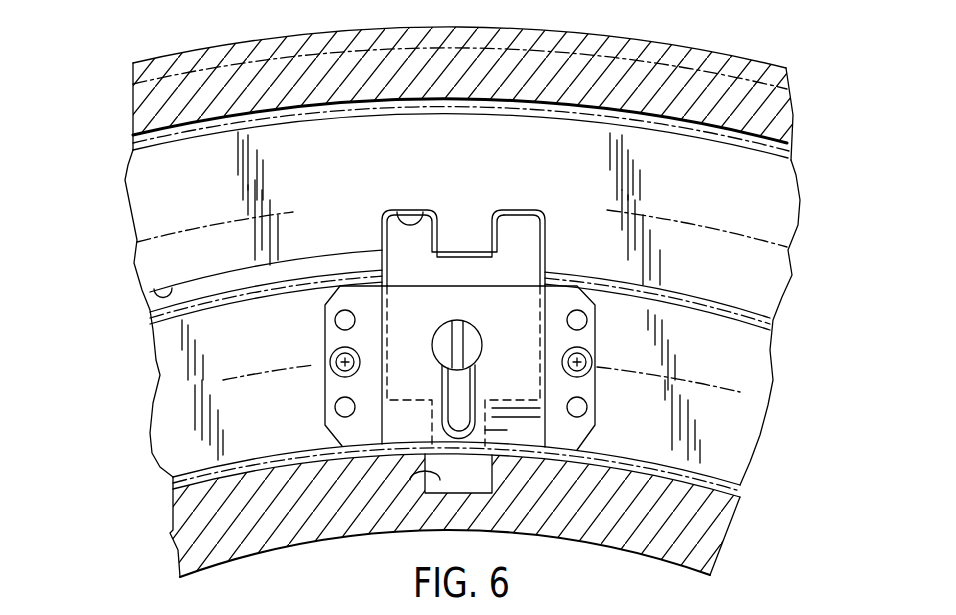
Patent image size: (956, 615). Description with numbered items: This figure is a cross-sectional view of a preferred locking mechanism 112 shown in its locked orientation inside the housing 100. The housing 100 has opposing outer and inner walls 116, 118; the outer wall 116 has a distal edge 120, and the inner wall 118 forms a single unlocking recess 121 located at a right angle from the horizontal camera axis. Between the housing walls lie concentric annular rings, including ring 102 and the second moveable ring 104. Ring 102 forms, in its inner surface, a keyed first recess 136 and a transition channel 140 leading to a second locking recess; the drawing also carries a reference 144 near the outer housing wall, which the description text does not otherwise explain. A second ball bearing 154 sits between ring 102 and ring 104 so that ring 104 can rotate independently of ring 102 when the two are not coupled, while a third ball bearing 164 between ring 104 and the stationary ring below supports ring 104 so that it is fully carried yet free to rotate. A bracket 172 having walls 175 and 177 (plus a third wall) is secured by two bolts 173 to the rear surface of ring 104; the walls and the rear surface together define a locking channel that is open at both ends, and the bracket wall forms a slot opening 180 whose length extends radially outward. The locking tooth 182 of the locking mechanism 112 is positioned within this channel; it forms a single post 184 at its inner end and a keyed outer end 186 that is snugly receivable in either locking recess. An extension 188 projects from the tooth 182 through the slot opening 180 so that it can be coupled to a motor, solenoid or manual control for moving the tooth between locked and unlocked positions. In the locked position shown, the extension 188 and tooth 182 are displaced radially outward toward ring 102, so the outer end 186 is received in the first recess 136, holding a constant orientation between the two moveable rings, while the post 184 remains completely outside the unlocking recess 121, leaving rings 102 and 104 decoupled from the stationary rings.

The housing 100 is at (630, 38).
The ring 102 is at (752, 191).
The second moveable ring 104 is at (749, 459).
The locking mechanism 112 is at (514, 321).
The outer wall 116 is at (300, 77).
The inner wall 118 is at (745, 535).
The distal edge 120 is at (757, 88).
The unlocking recess 121 is at (425, 460).
The first recess 136 is at (396, 220).
The transition channel 140 is at (155, 300).
The outer flange 144 is at (133, 147).
The second ball bearing 154 is at (150, 320).
The third ball bearing 164 is at (173, 481).
The bracket 172 is at (332, 395).
The bolts 173 is at (333, 370).
The wall 175 is at (383, 323).
The wall 177 is at (545, 403).
The slot opening 180 is at (462, 386).
The locking tooth 182 is at (403, 247).
The post 184 is at (438, 437).
The outer end 186 is at (518, 224).
The extension 188 is at (434, 338).